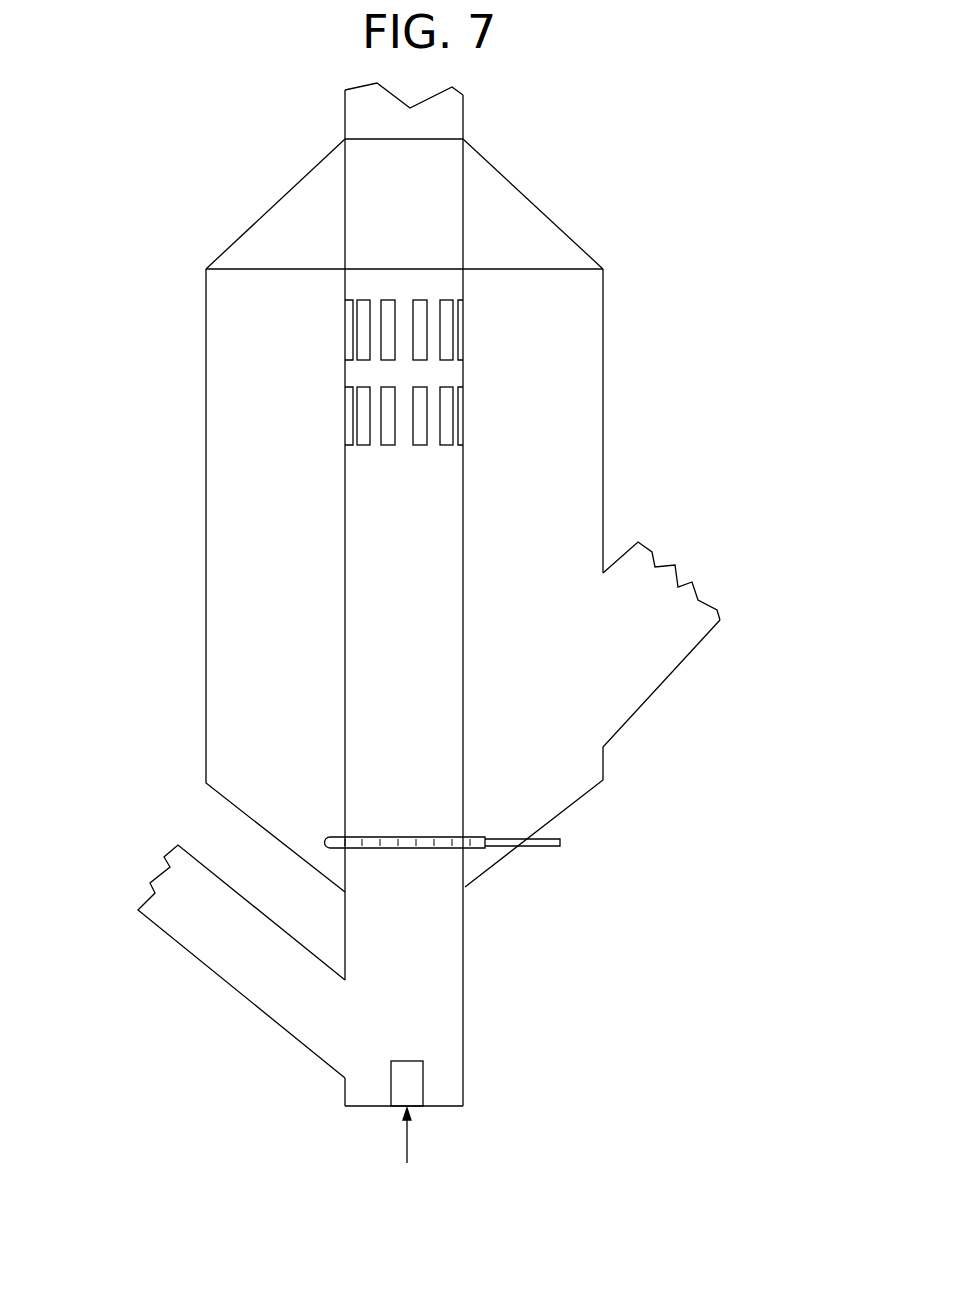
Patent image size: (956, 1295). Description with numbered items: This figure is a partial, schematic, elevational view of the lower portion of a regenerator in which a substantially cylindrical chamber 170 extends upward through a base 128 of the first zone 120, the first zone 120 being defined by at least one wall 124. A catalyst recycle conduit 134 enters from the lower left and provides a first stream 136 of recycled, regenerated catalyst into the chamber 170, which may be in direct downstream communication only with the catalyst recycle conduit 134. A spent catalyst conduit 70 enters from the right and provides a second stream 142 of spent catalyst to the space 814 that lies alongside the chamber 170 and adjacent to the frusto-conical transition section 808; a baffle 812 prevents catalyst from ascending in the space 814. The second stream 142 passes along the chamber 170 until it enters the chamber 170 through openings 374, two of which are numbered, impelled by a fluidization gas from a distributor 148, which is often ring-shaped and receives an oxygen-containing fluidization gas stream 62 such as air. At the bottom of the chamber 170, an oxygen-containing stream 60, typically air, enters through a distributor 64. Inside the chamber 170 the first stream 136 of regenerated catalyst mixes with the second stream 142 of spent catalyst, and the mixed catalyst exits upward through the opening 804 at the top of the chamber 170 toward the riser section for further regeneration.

The opening 804 is at (377, 139).
The frusto-conical transition section 808 is at (273, 203).
The baffle 812 is at (273, 264).
The chamber 170 is at (345, 578).
The openings 374 is at (383, 333).
The space 814 is at (541, 466).
The first zone 120 is at (283, 521).
The wall 124 is at (605, 465).
The base 128 is at (206, 723).
The spent catalyst conduit 70 is at (687, 675).
The second stream 142 is at (590, 665).
The fluidization gas stream 62 is at (548, 838).
The distributor 148 is at (477, 848).
The catalyst recycle conduit 134 is at (183, 950).
The first stream 136 is at (343, 1005).
The distributor 64 is at (408, 1085).
The oxygen-containing stream 60 is at (407, 1150).